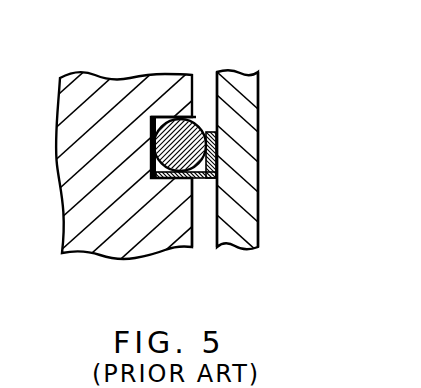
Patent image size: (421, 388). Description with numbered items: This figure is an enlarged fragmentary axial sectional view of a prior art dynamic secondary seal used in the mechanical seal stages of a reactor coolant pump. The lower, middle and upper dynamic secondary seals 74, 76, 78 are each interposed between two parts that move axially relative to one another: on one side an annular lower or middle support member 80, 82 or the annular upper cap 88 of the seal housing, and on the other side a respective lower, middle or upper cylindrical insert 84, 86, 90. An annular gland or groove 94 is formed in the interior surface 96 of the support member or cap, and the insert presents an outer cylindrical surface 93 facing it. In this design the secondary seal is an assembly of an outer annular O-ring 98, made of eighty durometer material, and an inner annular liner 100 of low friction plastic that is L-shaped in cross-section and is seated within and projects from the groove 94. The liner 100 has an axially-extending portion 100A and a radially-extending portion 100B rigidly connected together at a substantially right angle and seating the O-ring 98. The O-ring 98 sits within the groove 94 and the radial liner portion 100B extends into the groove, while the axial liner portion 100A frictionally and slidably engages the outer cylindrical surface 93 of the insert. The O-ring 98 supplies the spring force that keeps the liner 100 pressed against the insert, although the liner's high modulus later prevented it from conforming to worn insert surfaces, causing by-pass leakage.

The lower support member 80 is at (126, 194).
The middle support member 82 is at (126, 194).
The upper cap 88 is at (108, 74).
The lower dynamic secondary seal 74 is at (299, 160).
The middle dynamic secondary seal 76 is at (299, 160).
The upper dynamic secondary seal 78 is at (228, 114).
The outer cylindrical surface 93 is at (216, 100).
The lower cylindrical insert 84 is at (321, 159).
The middle cylindrical insert 86 is at (321, 159).
The upper cylindrical insert 90 is at (258, 199).
The annular groove 94 is at (173, 116).
The interior surface 96 is at (193, 229).
The annular O-ring 98 is at (160, 143).
The inner annular liner 100 is at (224, 216).
The axially-extending liner portion 100A is at (213, 139).
The radially-extending liner portion 100B is at (173, 180).